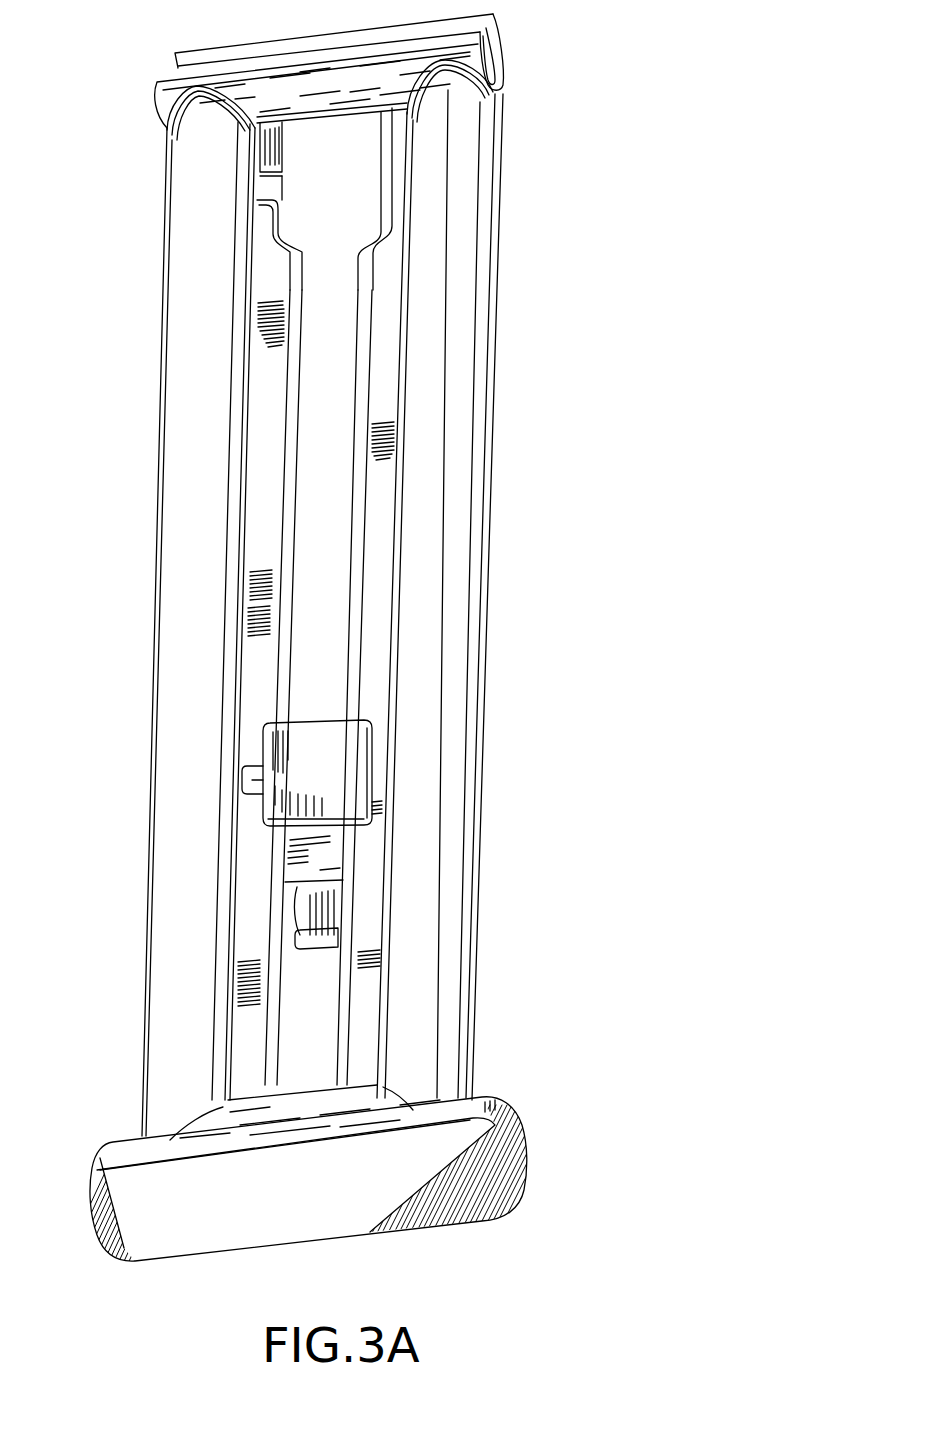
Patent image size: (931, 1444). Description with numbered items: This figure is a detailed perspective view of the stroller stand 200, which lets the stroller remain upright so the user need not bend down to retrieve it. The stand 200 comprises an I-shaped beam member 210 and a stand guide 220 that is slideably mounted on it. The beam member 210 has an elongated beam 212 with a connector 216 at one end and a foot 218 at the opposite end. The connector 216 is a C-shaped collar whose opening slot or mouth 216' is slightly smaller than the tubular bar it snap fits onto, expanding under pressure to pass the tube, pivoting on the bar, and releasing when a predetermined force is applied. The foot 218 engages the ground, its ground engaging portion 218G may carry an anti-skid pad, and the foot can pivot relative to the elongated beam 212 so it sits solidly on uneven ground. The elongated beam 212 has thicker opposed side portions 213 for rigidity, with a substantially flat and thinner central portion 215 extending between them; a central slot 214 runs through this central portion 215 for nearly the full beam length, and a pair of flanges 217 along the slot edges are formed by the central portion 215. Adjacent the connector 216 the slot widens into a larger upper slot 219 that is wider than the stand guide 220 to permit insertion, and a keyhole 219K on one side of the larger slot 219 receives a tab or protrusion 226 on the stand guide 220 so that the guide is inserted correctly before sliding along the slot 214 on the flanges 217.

The stand 200 is at (543, 561).
The beam member 210 is at (344, 600).
The elongated beam 212 is at (188, 620).
The side portions 213 is at (222, 316).
The central slot 214 is at (325, 385).
The central portion 215 is at (375, 412).
The connector 216 is at (401, 52).
The opening slot or mouth 216' is at (268, 86).
The flanges 217 is at (383, 481).
The foot 218 is at (520, 1130).
The ground engaging portion 218G is at (313, 1207).
The larger upper slot 219 is at (365, 187).
The keyhole 219K is at (265, 188).
The stand guide 220 is at (346, 780).
The tab or protrusion 226 is at (240, 778).